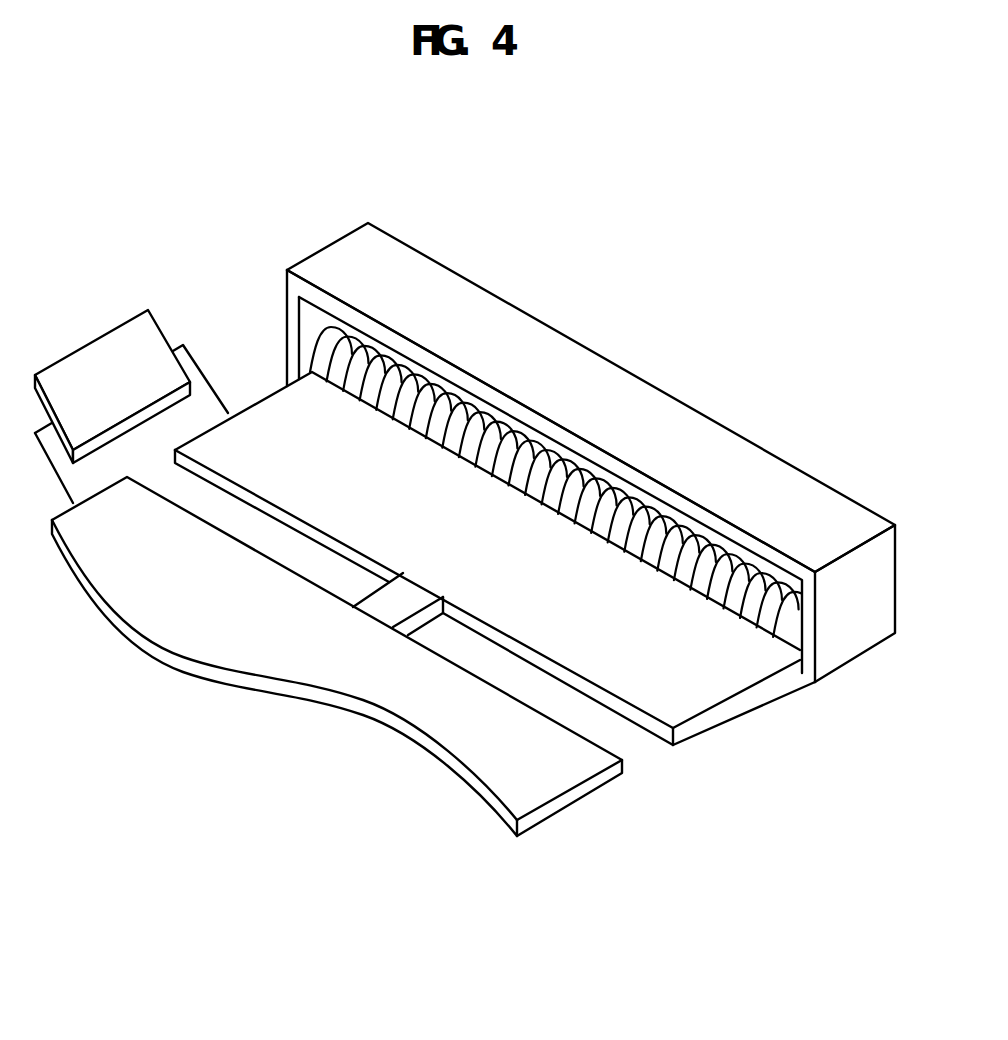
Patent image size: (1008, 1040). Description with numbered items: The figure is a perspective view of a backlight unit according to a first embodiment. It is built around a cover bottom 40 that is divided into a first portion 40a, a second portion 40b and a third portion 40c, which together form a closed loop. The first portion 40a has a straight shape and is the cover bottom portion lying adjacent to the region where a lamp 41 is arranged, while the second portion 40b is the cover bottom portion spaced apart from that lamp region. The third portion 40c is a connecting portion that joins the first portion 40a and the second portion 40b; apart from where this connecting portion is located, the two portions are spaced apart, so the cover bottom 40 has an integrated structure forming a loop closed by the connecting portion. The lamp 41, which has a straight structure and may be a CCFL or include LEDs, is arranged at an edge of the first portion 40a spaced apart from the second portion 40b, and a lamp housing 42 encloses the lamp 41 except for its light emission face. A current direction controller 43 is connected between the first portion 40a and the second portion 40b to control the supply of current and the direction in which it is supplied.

The cover bottom 40 is at (425, 608).
The first portion 40a is at (720, 712).
The second portion 40b is at (580, 790).
The third portion 40c is at (423, 617).
The lamp 41 is at (652, 525).
The lamp housing 42 is at (777, 470).
The current direction controller 43 is at (143, 323).